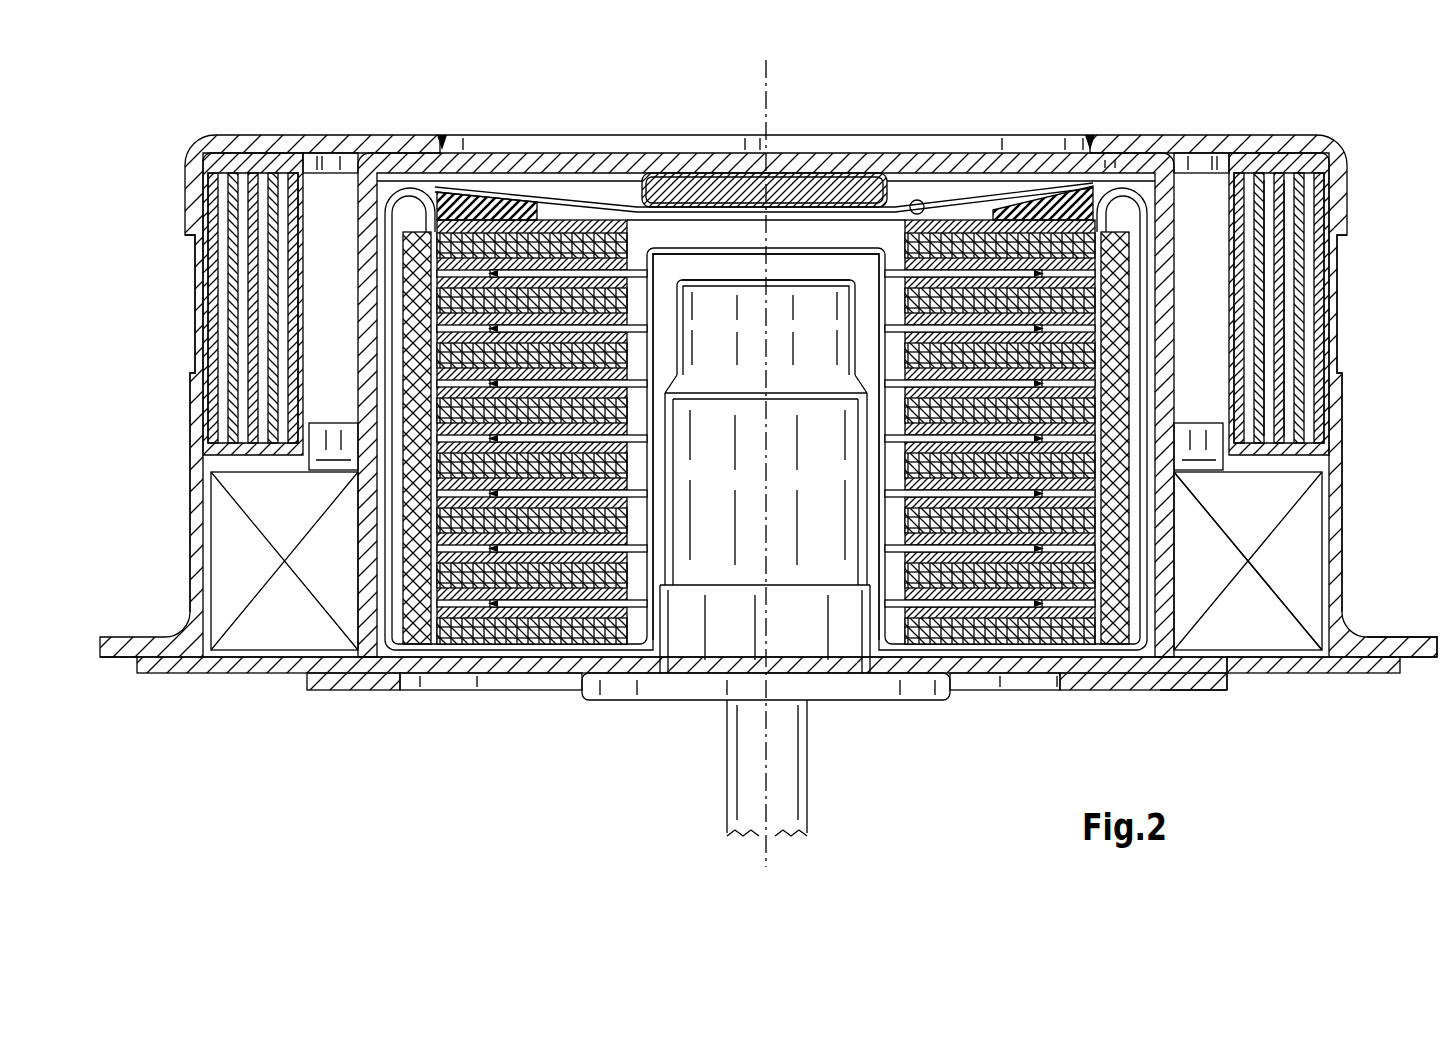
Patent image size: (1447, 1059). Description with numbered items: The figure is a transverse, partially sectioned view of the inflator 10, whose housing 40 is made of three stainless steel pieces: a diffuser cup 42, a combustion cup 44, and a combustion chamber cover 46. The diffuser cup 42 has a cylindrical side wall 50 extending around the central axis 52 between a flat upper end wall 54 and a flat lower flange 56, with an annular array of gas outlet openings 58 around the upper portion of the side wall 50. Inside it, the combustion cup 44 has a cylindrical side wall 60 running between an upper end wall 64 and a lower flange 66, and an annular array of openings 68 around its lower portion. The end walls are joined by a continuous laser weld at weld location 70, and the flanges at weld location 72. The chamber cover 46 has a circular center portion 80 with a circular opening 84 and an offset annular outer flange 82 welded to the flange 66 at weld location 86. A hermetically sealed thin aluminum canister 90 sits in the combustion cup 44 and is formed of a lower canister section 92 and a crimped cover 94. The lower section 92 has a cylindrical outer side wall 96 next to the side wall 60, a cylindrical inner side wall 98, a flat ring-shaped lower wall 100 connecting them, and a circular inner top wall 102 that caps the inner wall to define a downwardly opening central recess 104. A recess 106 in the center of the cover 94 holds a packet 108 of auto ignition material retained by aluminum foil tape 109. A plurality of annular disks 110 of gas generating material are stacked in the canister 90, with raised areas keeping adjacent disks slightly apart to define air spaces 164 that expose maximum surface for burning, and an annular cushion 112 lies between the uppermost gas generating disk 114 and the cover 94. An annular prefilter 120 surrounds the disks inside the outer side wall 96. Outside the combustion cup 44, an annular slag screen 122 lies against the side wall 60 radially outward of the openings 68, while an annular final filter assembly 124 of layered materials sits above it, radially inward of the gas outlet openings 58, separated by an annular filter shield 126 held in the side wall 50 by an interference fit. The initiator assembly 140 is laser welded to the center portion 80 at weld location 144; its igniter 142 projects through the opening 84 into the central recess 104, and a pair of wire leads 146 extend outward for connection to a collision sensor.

The inflator 10 is at (312, 104).
The housing 40 is at (182, 478).
The diffuser cup 42 is at (112, 652).
The combustion cup 44 is at (229, 662).
The combustion chamber cover 46 is at (336, 684).
The cylindrical side wall 50 is at (1338, 415).
The central axis 52 is at (758, 108).
The upper end wall 54 is at (1213, 148).
The lower flange 56 is at (1383, 640).
The gas outlet openings 58 is at (198, 302).
The cylindrical side wall 60 is at (1160, 314).
The upper end wall 64 is at (1034, 162).
The lower flange 66 is at (1297, 668).
The openings 68 is at (1160, 590).
The weld location 70 is at (1108, 170).
The weld location 72 is at (1403, 667).
The center portion 80 is at (1070, 667).
The outer flange 82 is at (1190, 690).
The circular opening 84 is at (860, 667).
The weld location 86 is at (1227, 677).
The canister 90 is at (980, 186).
The lower canister section 92 is at (876, 459).
The cover 94 is at (972, 188).
The outer side wall 96 is at (1150, 284).
The inner side wall 98 is at (882, 368).
The lower wall 100 is at (1018, 660).
The inner top wall 102 is at (710, 257).
The central recess 104 is at (747, 265).
The recess 106 is at (845, 178).
The packet of auto ignition material 108 is at (700, 178).
The aluminum foil tape 109 is at (916, 200).
The annular disks 110 is at (930, 590).
The annular cushion 112 is at (1063, 188).
The uppermost gas generating disk 114 is at (555, 238).
The prefilter 120 is at (1108, 350).
The slag screen 122 is at (1260, 550).
The final filter assembly 124 is at (1292, 207).
The filter shield 126 is at (1320, 472).
The initiator assembly 140 is at (676, 750).
The igniter 142 is at (800, 283).
The weld location 144 is at (960, 700).
The wire leads 146 is at (785, 815).
The air spaces 164 is at (600, 545).